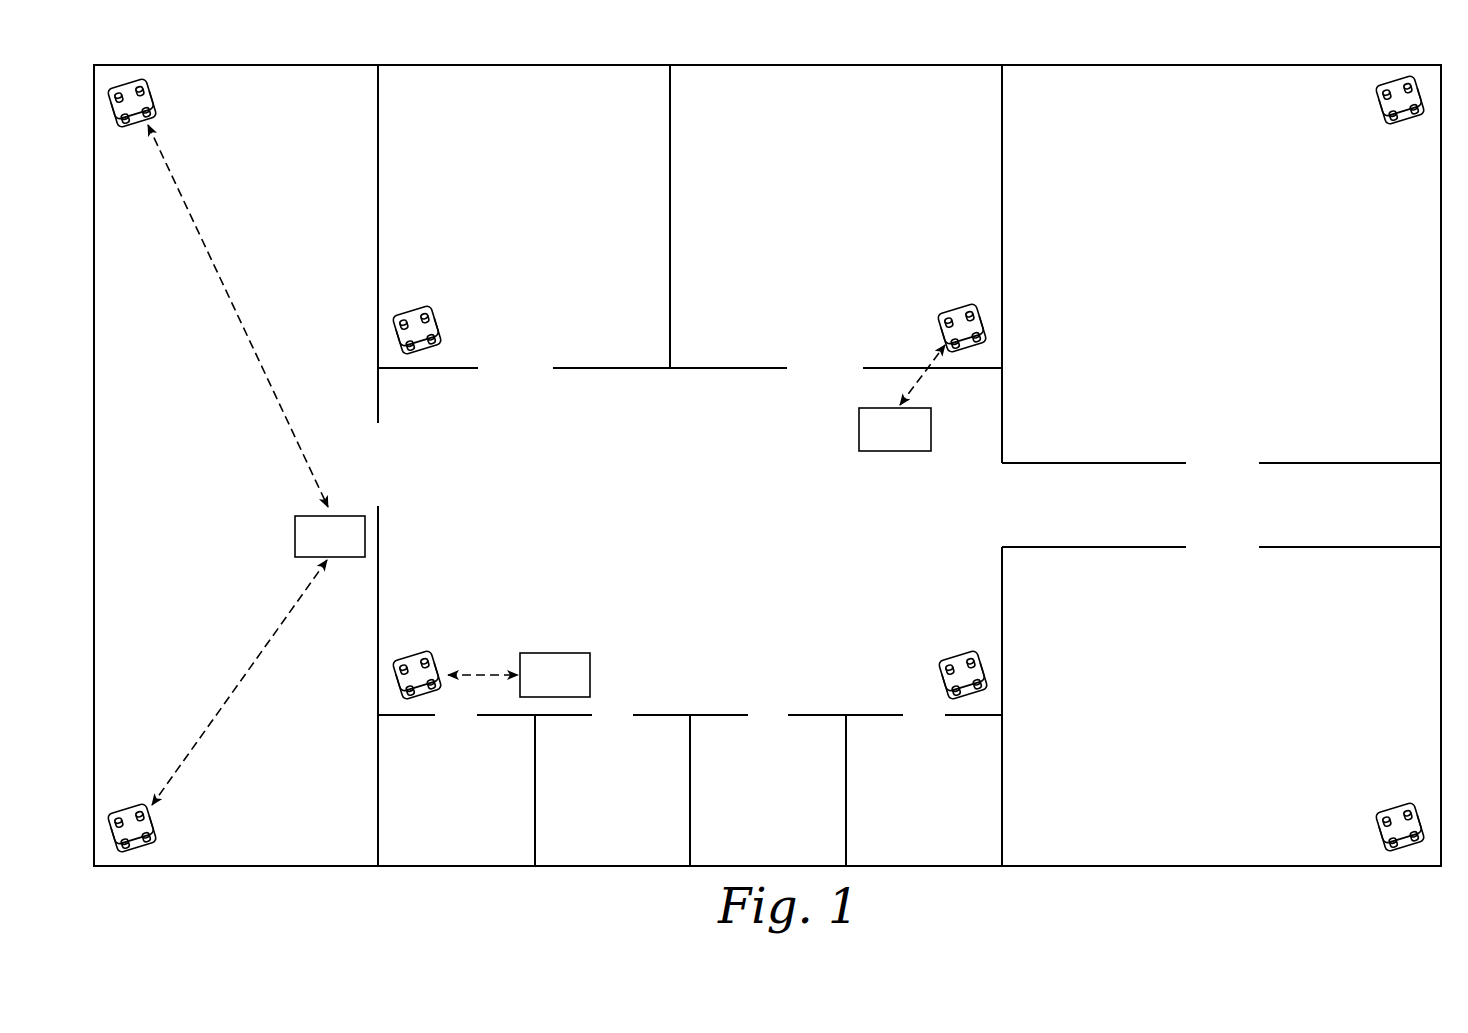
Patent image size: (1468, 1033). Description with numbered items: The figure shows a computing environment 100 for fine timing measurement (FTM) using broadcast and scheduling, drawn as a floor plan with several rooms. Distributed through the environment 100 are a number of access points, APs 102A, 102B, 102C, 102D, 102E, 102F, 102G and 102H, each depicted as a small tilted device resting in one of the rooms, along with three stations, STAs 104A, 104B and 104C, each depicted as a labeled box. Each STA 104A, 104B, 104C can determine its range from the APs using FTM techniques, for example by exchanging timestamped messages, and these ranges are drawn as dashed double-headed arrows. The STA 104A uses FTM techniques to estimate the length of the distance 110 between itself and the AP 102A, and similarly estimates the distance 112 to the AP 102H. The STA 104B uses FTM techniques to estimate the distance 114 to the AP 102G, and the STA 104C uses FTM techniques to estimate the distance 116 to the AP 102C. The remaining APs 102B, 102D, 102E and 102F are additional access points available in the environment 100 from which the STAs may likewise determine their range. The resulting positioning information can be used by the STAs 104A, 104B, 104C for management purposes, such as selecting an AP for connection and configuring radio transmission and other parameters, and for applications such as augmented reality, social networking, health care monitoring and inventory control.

The computing environment 100 is at (188, 896).
The access point 102A is at (152, 96).
The access point 102B is at (413, 310).
The access point 102C is at (958, 306).
The access point 102D is at (1378, 102).
The access point 102E is at (1398, 805).
The access point 102F is at (958, 654).
The access point 102G is at (413, 654).
The access point 102H is at (137, 808).
The station 104A is at (330, 536).
The station 104B is at (555, 675).
The station 104C is at (895, 429).
The distance 110 is at (215, 268).
The distance 112 is at (218, 712).
The distance 114 is at (482, 672).
The distance 116 is at (905, 393).